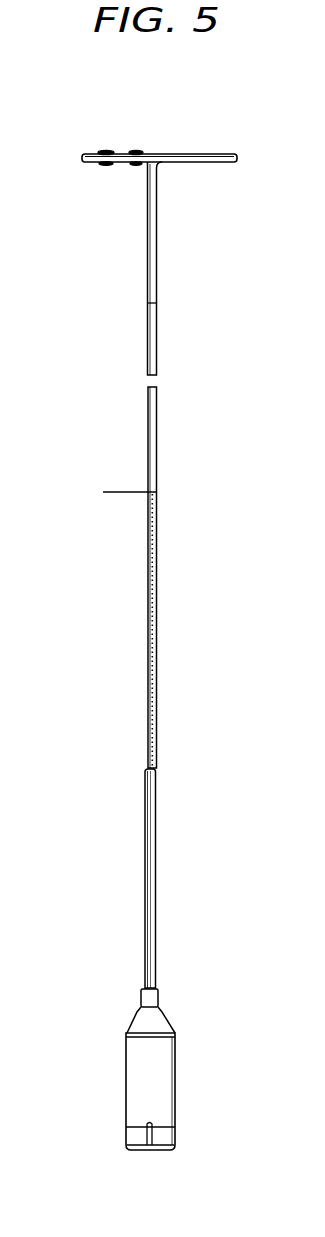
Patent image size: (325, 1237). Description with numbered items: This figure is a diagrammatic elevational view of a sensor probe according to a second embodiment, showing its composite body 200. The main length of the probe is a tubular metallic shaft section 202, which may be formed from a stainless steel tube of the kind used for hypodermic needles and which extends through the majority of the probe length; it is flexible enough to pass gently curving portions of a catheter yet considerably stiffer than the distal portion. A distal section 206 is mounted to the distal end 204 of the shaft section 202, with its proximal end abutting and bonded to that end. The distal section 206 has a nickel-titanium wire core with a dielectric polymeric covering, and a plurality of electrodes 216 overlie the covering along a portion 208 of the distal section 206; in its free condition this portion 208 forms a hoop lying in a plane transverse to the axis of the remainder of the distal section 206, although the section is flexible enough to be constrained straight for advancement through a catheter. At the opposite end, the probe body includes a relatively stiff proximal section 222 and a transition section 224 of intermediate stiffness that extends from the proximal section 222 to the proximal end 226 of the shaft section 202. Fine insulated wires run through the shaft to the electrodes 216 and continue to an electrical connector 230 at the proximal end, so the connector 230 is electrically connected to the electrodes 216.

The composite body 200 is at (118, 580).
The tubular metallic shaft section 202 is at (157, 435).
The distal end of shaft section 204 is at (150, 303).
The distal section 206 is at (130, 217).
The portion of distal section 208 is at (198, 138).
The electrodes 216 is at (105, 151).
The proximal section 222 is at (157, 897).
The transition section 224 is at (156, 600).
The proximal end of shaft section 226 is at (118, 492).
The electrical connector 230 is at (175, 1073).